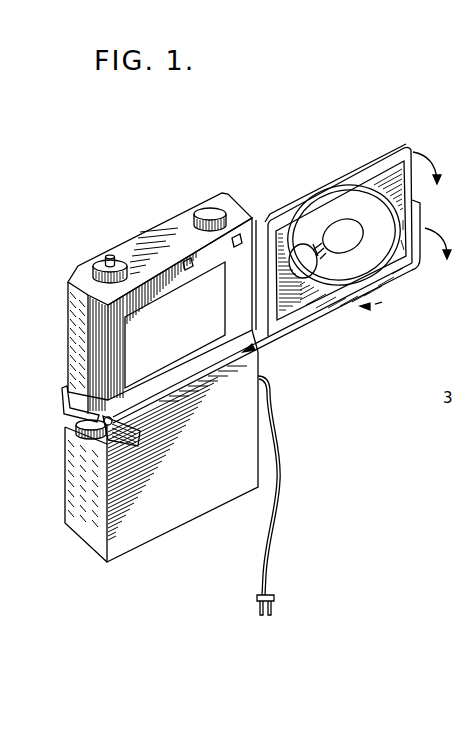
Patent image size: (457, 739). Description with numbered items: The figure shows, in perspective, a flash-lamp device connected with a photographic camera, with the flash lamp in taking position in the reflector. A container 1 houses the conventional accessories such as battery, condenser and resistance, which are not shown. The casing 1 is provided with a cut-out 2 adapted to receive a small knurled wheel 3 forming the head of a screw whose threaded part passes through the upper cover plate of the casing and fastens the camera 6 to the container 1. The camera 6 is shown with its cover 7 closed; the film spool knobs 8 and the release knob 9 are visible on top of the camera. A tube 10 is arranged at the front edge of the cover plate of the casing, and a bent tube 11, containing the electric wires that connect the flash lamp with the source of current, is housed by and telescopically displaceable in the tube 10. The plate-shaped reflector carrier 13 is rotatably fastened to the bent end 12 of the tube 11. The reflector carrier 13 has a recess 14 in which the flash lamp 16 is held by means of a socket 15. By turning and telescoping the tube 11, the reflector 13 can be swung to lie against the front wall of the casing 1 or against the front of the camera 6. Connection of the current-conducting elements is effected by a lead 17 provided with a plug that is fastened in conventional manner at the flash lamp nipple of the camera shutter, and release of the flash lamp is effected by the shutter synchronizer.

The container 1 is at (170, 517).
The cut-out 2 is at (122, 430).
The knurled wheel 3 is at (83, 421).
The camera 6 is at (233, 210).
The cover 7 is at (137, 342).
The film spool knobs 8 is at (96, 268).
The release knob 9 is at (110, 255).
The tube 10 is at (258, 357).
The bent tube 11 is at (316, 318).
The bent end 12 is at (418, 201).
The reflector carrier 13 is at (389, 160).
The recess 14 is at (347, 190).
The socket 15 is at (312, 258).
The flash lamp 16 is at (345, 243).
The lead 17 is at (278, 527).